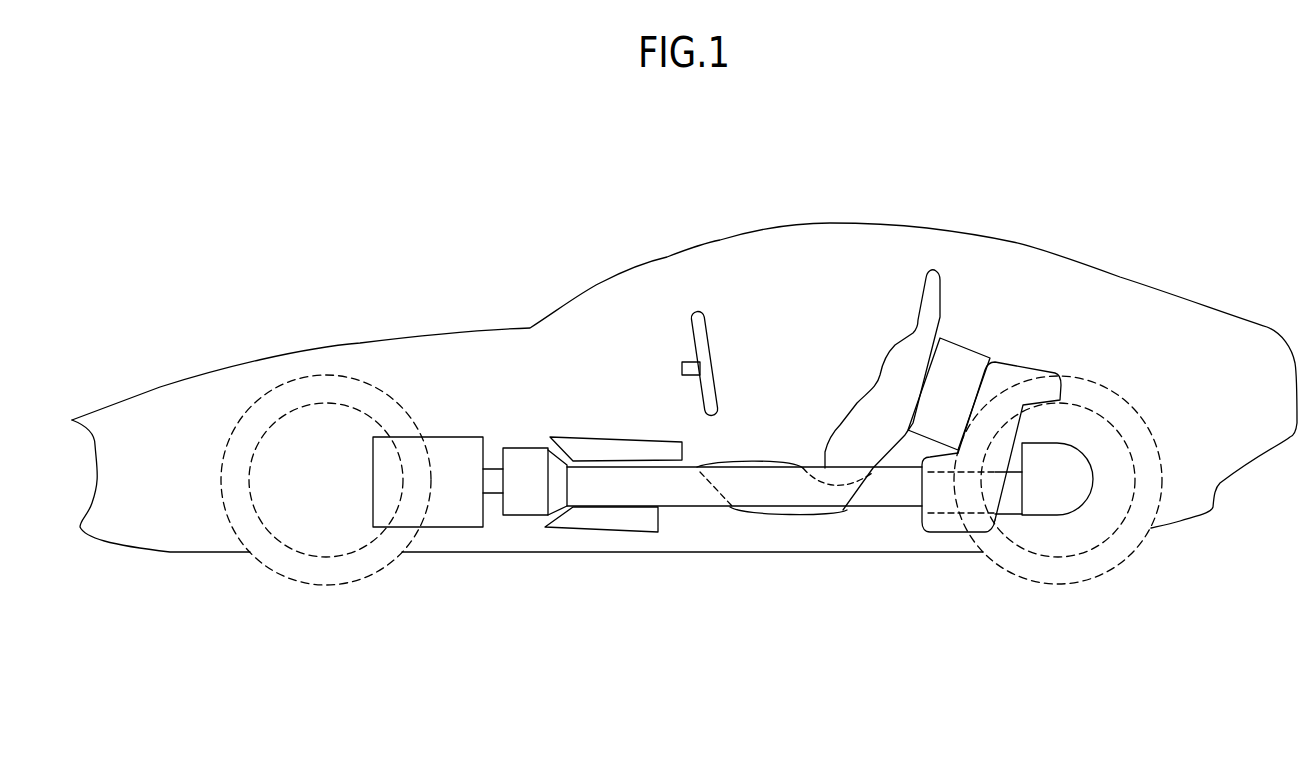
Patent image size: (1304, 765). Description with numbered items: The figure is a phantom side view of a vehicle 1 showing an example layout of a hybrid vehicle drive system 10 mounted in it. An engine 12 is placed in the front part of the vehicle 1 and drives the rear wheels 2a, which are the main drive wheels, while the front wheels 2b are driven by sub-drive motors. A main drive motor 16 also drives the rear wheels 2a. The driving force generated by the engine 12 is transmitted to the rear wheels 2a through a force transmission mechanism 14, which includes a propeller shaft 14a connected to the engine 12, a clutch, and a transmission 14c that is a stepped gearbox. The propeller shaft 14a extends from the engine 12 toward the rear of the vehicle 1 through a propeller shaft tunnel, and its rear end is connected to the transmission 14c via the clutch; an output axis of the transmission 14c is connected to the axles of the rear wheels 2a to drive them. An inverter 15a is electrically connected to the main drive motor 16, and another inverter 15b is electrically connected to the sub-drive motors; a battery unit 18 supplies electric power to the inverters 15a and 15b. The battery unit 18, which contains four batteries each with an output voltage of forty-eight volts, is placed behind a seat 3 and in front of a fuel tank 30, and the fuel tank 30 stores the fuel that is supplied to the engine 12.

The vehicle 1 is at (364, 224).
The rear wheels 2a is at (1097, 563).
The front wheels 2b is at (312, 568).
The seat 3 is at (932, 270).
The vehicle drive system 10 is at (527, 484).
The engine 12 is at (452, 513).
The force transmission mechanism 14 is at (830, 550).
The propeller shaft 14a is at (890, 498).
The transmission 14c is at (1043, 490).
The inverter 15a is at (598, 522).
The inverter 15b is at (593, 442).
The main drive motor 16 is at (525, 503).
The battery unit 18 is at (952, 357).
The fuel tank 30 is at (1013, 370).